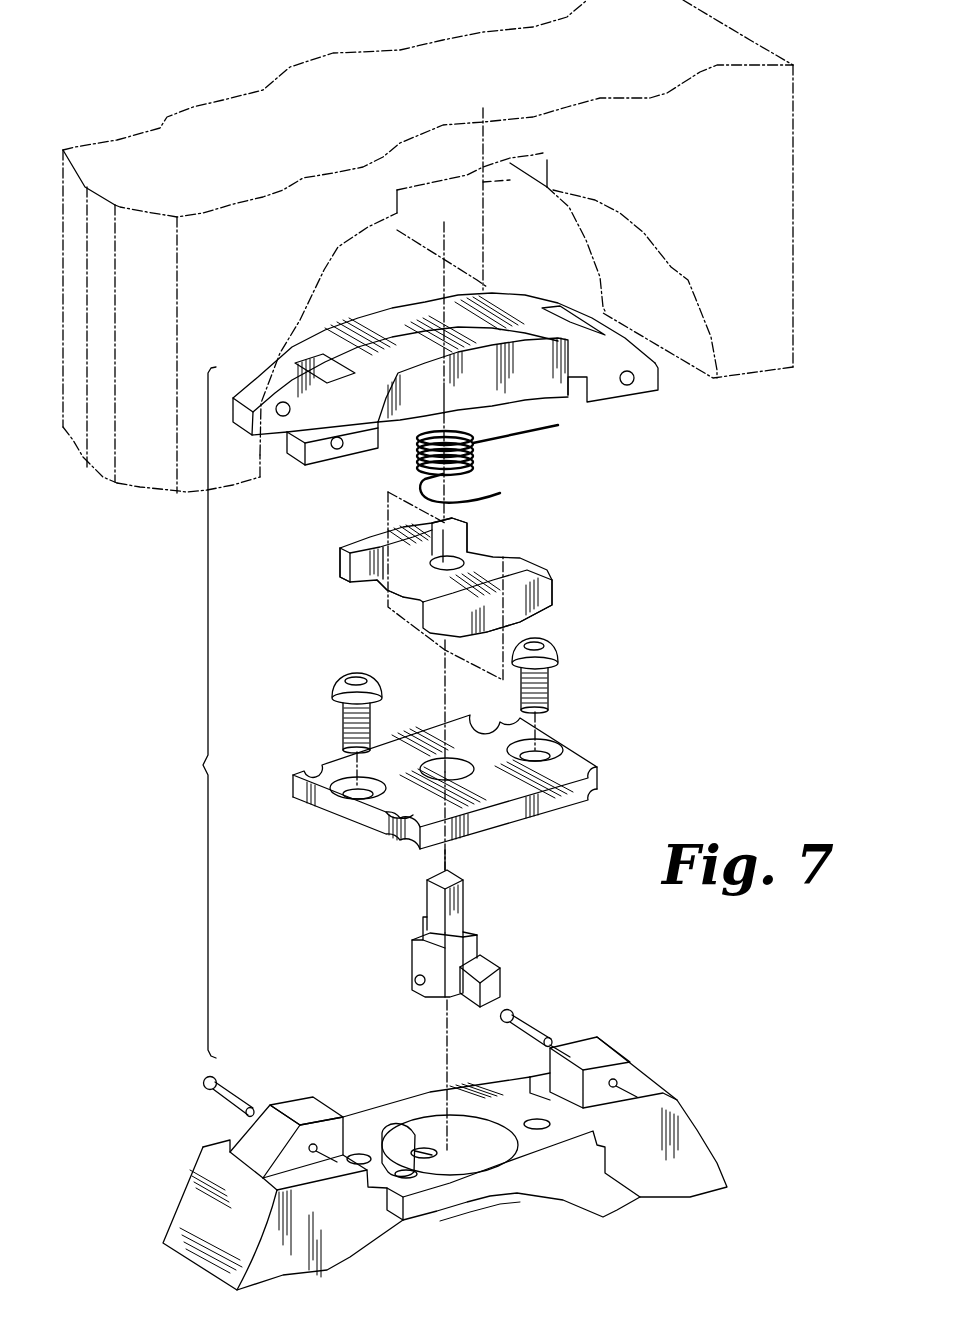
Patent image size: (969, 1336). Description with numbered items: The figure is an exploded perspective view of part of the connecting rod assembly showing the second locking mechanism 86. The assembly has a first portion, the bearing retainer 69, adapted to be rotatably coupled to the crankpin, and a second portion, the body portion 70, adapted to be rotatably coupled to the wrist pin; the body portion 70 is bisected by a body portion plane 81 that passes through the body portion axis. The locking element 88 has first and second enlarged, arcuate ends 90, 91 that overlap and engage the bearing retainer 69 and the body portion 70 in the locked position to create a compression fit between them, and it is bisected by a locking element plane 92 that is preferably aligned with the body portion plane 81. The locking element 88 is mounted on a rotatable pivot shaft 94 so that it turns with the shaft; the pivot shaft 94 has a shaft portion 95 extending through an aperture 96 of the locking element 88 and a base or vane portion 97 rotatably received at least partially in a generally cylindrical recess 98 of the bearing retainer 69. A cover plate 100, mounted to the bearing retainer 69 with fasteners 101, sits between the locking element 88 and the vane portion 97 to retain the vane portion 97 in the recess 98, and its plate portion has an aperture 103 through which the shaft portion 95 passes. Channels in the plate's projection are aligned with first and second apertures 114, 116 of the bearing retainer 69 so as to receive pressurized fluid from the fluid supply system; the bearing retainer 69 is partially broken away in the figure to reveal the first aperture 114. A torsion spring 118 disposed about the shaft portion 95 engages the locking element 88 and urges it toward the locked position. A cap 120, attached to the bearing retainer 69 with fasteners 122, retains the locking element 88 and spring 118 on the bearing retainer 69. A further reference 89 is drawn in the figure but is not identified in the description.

The bearing retainer 69 is at (475, 1145).
The body portion 70 is at (405, 267).
The body portion plane 81 is at (547, 163).
The second locking mechanism 86 is at (192, 712).
The locking element 88 is at (480, 586).
The axis 89 is at (505, 686).
The first enlarged arcuate end 90 is at (565, 606).
The second enlarged arcuate end 91 is at (305, 563).
The locking element plane 92 is at (511, 536).
The pivot shaft 94 is at (452, 928).
The shaft portion 95 is at (427, 898).
The aperture 96 is at (383, 577).
The vane portion 97 is at (500, 985).
The cylindrical recess 98 is at (413, 1134).
The cover plate 100 is at (485, 753).
The fasteners 101 is at (343, 712).
The aperture 103 is at (450, 763).
The first aperture 114 is at (406, 1170).
The second aperture 116 is at (427, 1152).
The torsion spring 118 is at (417, 457).
The cap 120 is at (618, 405).
The fasteners 122 is at (205, 1093).